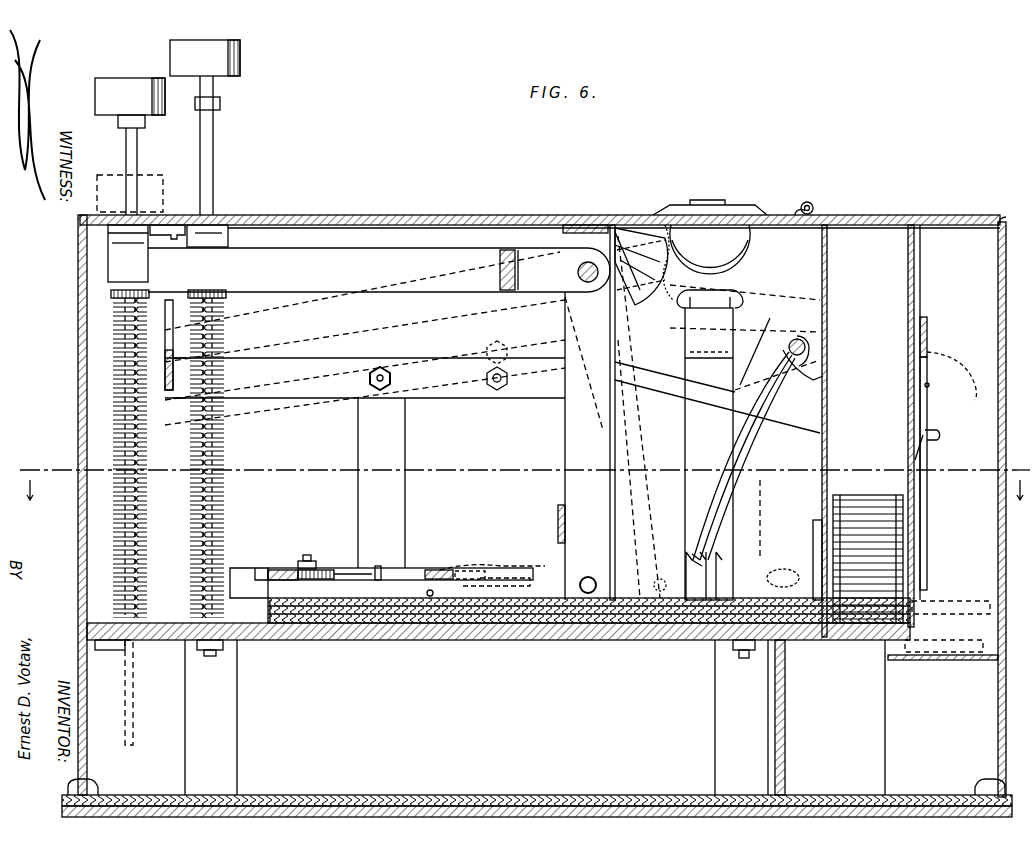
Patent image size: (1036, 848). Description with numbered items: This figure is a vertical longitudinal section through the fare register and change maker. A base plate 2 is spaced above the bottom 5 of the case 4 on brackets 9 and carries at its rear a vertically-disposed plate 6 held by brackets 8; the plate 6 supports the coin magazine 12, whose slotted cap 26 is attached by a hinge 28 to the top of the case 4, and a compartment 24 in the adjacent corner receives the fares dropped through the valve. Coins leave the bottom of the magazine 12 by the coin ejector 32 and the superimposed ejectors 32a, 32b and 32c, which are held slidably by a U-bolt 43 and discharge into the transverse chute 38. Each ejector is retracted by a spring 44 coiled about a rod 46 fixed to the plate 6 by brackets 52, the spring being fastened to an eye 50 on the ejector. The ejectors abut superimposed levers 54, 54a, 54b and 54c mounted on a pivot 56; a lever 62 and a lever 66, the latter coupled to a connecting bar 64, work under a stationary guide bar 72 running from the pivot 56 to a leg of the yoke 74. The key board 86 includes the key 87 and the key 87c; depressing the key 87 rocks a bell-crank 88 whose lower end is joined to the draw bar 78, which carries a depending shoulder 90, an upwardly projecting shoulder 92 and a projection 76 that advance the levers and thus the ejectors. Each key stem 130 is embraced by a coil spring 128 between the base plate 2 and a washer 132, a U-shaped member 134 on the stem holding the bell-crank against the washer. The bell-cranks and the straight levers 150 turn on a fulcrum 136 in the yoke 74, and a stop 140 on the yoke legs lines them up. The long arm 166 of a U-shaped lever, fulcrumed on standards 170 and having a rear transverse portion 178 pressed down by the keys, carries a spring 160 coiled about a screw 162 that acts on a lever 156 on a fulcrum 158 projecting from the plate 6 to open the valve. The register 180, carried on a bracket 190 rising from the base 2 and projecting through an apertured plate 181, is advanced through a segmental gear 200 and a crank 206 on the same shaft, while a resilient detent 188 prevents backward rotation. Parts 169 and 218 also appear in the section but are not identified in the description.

The base plate 2 is at (462, 640).
The case 4 is at (78, 458).
The bottom 5 is at (520, 797).
The vertically-disposed plate 6 is at (822, 483).
The brackets 8 is at (812, 528).
The brackets 9 is at (222, 750).
The coin magazine 12 is at (905, 276).
The compartment 24 is at (804, 717).
The slotted cap 26 is at (925, 215).
The hinge 28 is at (803, 203).
The coin ejector 32 is at (512, 622).
The coin ejector 32a is at (385, 620).
The coin ejector 32b is at (398, 620).
The coin ejector 32c is at (408, 622).
The chute 38 is at (941, 698).
The U-bolt 43 is at (434, 592).
The spring 44 is at (722, 465).
The rod 46 is at (808, 340).
The eye 50 is at (612, 577).
The brackets 52 is at (808, 347).
The lever 54 is at (276, 600).
The lever 54a is at (290, 602).
The lever 54b is at (300, 604).
The lever 54c is at (312, 606).
The pivot 56 is at (307, 555).
The lever 62 is at (282, 568).
The connecting bar 64 is at (462, 566).
The lever 66 is at (436, 570).
The guide bar 72 is at (342, 568).
The yoke 74 is at (578, 235).
The projection 76 is at (378, 566).
The draw bar 78 is at (400, 583).
The key board 86 is at (130, 129).
The key 87 is at (108, 82).
The key 87c is at (218, 48).
The bell-crank 88 is at (280, 290).
The depending shoulder 90 is at (232, 612).
The upwardly projecting shoulder 92 is at (248, 571).
The coil spring 128 is at (118, 400).
The key stem 130 is at (125, 428).
The washer 132 is at (108, 296).
The U-shaped member 134 is at (106, 264).
The fulcrum 136 is at (577, 272).
The stop 140 is at (556, 518).
The lever 150 is at (535, 250).
The lever 156 is at (930, 322).
The fulcrum 158 is at (930, 384).
The spring 160 is at (935, 440).
The screw 162 is at (498, 390).
The long arm 166 is at (340, 398).
The nut 169 is at (390, 385).
The standards 170 is at (406, 442).
The rear transverse portion 178 is at (170, 300).
The register 180 is at (710, 266).
The apertured plate 181 is at (735, 208).
The resilient detent 188 is at (660, 228).
The bracket 190 is at (709, 454).
The segmental gear 200 is at (625, 240).
The crank 206 is at (783, 300).
The collar 218 is at (203, 105).